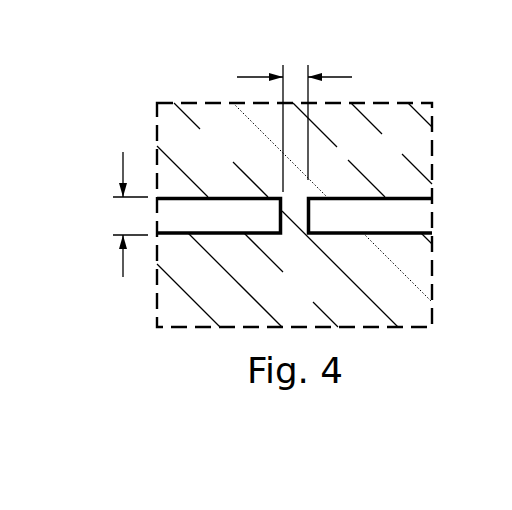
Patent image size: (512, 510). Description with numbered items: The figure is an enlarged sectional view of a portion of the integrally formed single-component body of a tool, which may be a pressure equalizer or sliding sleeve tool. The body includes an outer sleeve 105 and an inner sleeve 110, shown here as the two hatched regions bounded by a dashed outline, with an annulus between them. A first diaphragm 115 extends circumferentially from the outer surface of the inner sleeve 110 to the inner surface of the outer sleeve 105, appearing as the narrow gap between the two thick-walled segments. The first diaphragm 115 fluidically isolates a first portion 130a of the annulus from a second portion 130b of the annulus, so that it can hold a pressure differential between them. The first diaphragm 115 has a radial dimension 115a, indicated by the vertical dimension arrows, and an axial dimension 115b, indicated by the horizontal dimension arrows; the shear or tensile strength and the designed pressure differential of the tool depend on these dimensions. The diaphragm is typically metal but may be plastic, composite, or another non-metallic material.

The outer sleeve 105 is at (413, 140).
The inner sleeve 110 is at (413, 257).
The first diaphragm 115 is at (306, 215).
The radial dimension 115a is at (123, 159).
The axial dimension 115b is at (335, 76).
The first portion of the annulus 130a is at (359, 215).
The second portion of the annulus 130b is at (196, 218).